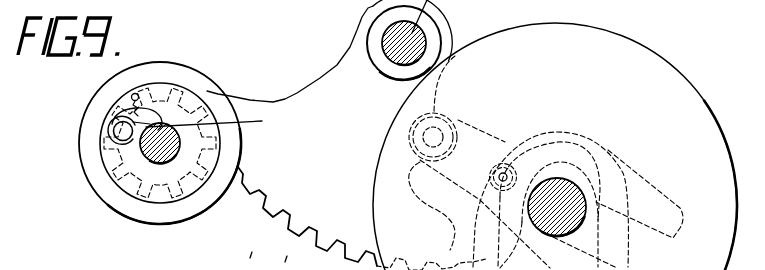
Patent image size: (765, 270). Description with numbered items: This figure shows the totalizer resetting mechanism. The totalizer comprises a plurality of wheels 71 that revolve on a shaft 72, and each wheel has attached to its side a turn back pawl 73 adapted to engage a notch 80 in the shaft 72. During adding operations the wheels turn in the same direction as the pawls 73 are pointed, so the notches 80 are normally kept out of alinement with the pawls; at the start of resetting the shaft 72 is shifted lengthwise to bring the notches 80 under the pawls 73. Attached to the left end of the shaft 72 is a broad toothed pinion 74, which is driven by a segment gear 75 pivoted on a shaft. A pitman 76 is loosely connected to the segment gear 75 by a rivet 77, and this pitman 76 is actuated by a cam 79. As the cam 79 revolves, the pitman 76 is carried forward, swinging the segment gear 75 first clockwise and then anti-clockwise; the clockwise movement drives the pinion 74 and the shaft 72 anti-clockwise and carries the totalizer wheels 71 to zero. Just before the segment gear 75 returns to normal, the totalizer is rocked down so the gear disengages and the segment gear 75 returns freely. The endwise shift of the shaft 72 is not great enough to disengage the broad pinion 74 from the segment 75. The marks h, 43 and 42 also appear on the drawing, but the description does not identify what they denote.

The totalizer wheels 71 is at (88, 109).
The shaft 72 is at (147, 155).
The turn back pawl 73 is at (153, 112).
The broad toothed pinion 74 is at (186, 99).
The segment gear 75 is at (338, 84).
The pitman 76 is at (483, 138).
The rivet 77 is at (438, 131).
The cam 79 is at (667, 62).
The notch 80 is at (215, 122).
The disk hub shaft h is at (568, 197).
The rack element 43 is at (251, 261).
The rack element 42 is at (289, 263).